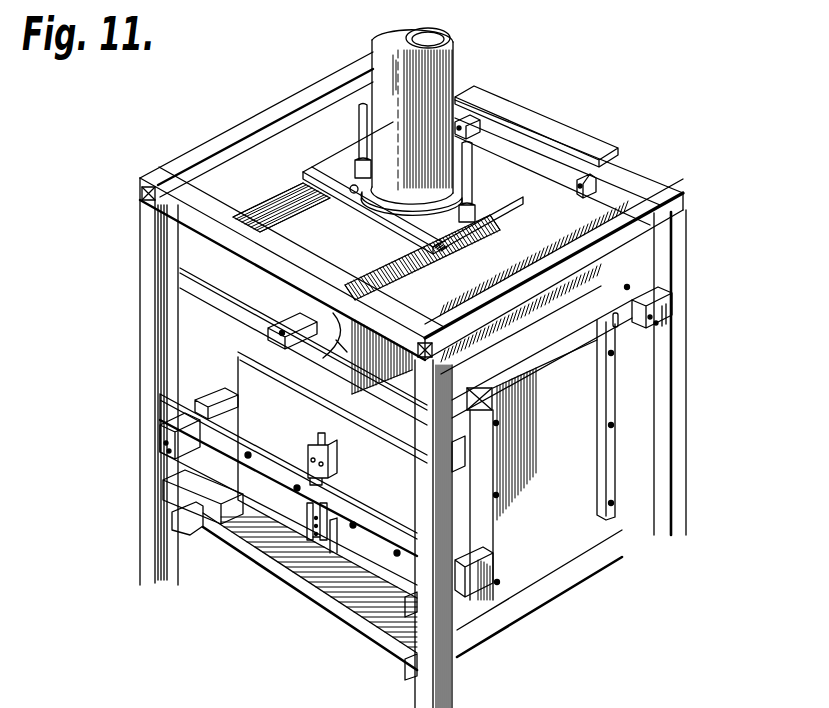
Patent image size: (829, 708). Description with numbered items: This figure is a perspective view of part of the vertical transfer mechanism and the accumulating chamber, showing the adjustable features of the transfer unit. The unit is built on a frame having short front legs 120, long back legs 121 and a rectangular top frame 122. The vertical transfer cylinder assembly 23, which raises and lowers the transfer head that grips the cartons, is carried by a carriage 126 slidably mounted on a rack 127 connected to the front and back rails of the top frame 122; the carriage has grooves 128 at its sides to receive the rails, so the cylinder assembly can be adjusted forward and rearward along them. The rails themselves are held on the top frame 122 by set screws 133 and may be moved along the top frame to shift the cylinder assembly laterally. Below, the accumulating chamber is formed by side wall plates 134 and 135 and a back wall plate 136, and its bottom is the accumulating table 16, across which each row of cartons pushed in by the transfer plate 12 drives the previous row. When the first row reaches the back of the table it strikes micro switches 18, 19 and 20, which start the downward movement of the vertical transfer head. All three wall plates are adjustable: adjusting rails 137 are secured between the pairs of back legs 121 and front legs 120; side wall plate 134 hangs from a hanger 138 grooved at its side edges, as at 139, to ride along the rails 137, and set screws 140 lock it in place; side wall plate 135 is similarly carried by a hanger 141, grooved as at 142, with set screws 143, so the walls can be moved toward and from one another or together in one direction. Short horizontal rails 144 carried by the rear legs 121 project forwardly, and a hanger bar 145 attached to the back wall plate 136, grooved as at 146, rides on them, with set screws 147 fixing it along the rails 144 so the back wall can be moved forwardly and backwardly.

The transfer plate 12 is at (300, 148).
The accumulating table 16 is at (355, 597).
The micro switch 18 is at (307, 535).
The micro switch 19 is at (323, 537).
The micro switch 20 is at (337, 541).
The vertical transfer cylinder assembly 23 is at (500, 88).
The front legs 120 is at (687, 428).
The back legs 121 is at (145, 394).
The top frame 122 is at (668, 194).
The carriage 126 is at (490, 205).
The rack 127 is at (585, 152).
The grooves 128 is at (390, 250).
The set screws 133 is at (582, 192).
The side wall plate 134 is at (588, 530).
The side wall plate 135 is at (322, 316).
The back wall plate 136 is at (303, 422).
The adjusting rails 137 is at (672, 300).
The hanger 138 is at (523, 352).
The grooves 139 is at (640, 333).
The set screws 140 is at (643, 283).
The hanger 141 is at (293, 366).
The grooves 142 is at (238, 352).
The set screws 143 is at (304, 324).
The short horizontal rails 144 is at (203, 442).
The hanger bar 145 is at (278, 461).
The grooves 146 is at (160, 428).
The set screws 147 is at (222, 378).